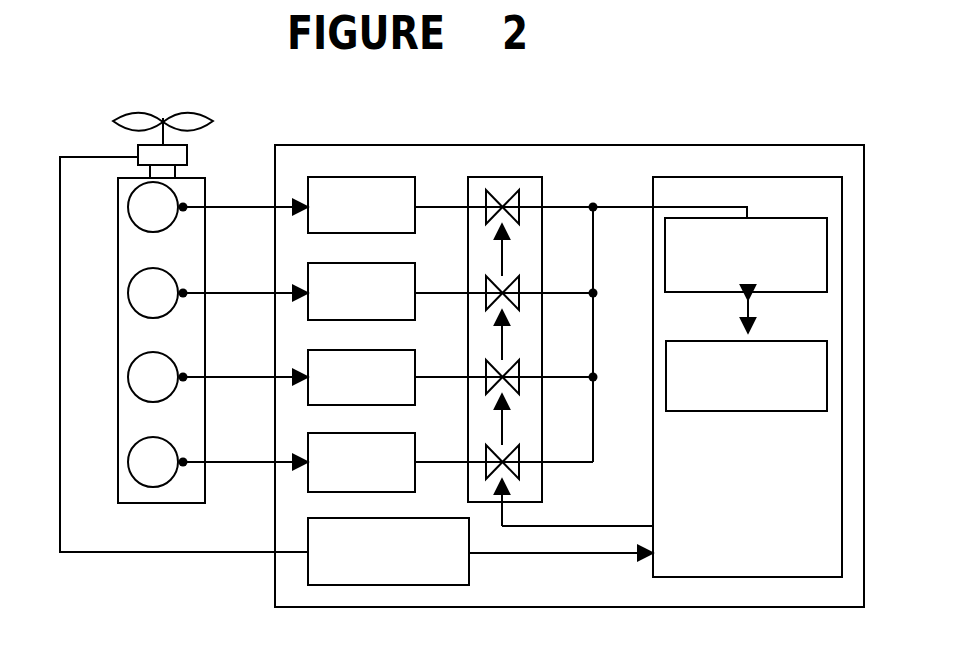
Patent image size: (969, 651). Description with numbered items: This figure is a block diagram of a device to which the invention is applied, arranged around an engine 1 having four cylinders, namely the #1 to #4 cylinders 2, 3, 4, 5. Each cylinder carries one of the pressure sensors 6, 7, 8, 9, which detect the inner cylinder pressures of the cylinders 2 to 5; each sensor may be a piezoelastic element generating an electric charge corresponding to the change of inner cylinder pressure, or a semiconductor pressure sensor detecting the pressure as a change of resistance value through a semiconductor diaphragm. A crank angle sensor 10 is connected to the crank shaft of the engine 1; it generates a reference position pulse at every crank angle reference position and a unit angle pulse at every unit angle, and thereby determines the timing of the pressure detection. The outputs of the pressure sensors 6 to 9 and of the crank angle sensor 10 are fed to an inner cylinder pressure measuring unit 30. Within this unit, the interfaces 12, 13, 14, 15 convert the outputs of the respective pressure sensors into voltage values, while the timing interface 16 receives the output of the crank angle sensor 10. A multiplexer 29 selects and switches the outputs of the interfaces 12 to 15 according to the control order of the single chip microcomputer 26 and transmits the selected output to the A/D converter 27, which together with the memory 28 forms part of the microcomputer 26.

The engine 1 is at (158, 503).
The #1 cylinder 2 is at (137, 228).
The #2 cylinder 3 is at (137, 314).
The #3 cylinder 4 is at (137, 398).
The #4 cylinder 5 is at (137, 482).
The pressure sensor 6 is at (186, 204).
The pressure sensor 7 is at (186, 290).
The pressure sensor 8 is at (186, 374).
The pressure sensor 9 is at (186, 459).
The crank angle sensor 10 is at (187, 155).
The interface 12 is at (395, 177).
The interface 13 is at (392, 263).
The interface 14 is at (392, 350).
The interface 15 is at (392, 433).
The timing interface 16 is at (418, 585).
The single chip microcomputer 26 is at (842, 259).
The A/D converter 27 is at (827, 275).
The memory 28 is at (780, 411).
The multiplexer 29 is at (538, 177).
The inner cylinder pressure measuring unit 30 is at (718, 145).